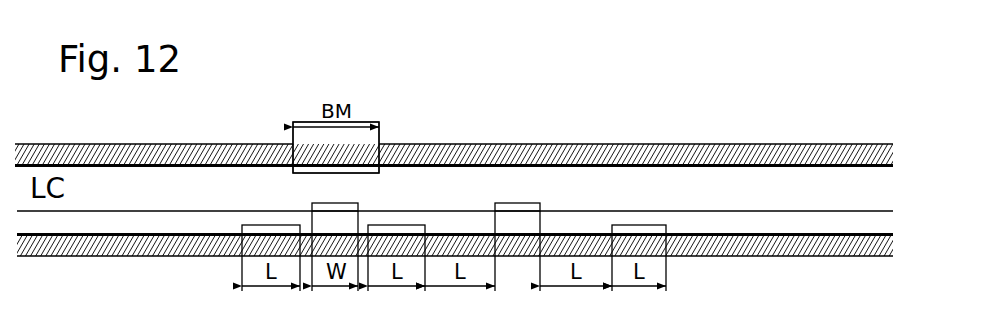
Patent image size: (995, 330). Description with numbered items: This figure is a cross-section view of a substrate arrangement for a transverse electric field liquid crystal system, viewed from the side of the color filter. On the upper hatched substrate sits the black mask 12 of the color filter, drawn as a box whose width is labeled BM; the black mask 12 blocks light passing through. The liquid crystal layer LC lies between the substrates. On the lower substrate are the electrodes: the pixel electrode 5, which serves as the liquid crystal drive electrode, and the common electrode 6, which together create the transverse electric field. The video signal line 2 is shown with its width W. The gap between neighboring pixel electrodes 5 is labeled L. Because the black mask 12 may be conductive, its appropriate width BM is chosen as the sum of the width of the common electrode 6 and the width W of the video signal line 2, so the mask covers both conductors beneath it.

The video signal line 2 is at (327, 203).
The black mask 12 is at (353, 173).
The common electrode 6 is at (408, 228).
The pixel electrode 5 is at (527, 205).